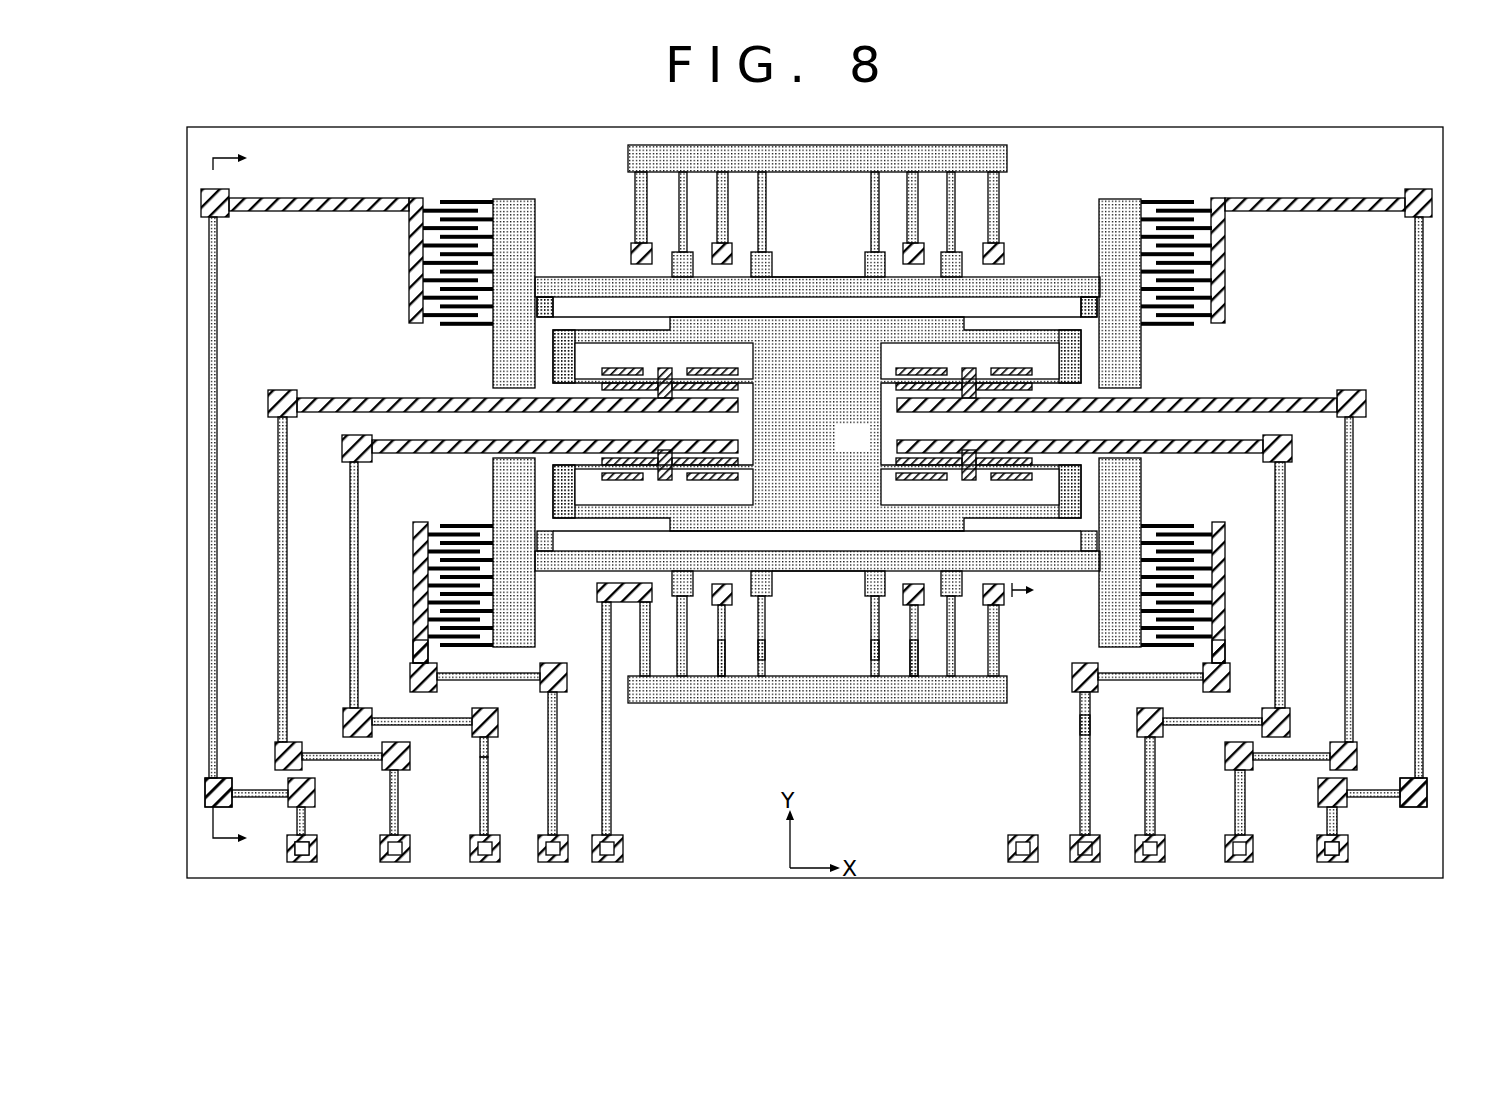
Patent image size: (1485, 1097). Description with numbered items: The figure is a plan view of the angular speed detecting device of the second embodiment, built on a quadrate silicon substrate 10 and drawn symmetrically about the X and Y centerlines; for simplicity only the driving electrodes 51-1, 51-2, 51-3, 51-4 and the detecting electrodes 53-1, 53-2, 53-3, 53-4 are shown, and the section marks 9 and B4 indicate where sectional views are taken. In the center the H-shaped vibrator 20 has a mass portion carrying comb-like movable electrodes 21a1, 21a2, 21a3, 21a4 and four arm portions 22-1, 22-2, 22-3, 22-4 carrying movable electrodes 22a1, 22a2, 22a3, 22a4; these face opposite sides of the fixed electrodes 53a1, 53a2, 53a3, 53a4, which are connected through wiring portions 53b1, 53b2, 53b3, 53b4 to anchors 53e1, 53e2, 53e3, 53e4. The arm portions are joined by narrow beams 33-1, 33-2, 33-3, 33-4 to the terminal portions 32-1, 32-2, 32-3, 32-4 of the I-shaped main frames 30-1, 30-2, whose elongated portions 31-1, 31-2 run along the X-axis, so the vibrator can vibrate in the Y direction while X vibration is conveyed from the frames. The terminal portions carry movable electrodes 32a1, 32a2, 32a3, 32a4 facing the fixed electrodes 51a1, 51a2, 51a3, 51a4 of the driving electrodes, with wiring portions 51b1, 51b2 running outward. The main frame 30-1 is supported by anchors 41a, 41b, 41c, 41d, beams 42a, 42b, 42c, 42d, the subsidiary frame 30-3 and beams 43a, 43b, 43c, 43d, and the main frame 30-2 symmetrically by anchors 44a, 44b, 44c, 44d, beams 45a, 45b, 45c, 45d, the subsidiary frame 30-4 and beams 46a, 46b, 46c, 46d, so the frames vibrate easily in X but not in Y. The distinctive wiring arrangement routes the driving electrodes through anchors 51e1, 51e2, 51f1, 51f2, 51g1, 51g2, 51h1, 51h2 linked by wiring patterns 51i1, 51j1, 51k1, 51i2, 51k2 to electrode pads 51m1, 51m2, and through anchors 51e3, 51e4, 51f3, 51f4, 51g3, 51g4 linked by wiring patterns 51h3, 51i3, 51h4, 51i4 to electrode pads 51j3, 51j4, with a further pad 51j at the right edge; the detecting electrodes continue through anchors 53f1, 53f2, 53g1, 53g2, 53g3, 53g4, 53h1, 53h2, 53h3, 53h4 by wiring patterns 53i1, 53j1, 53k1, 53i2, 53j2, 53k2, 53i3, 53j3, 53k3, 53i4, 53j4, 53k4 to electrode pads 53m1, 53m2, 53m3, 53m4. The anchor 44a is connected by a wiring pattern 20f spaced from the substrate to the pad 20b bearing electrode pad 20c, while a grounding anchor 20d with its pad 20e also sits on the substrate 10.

The substrate 10 is at (744, 858).
The section line 9 is at (236, 498).
The section line B4 is at (1038, 542).
The vibrator 20 is at (866, 450).
The pad 20b is at (623, 850).
The electrode pad 20c is at (612, 862).
The grounding anchor 20d is at (1008, 850).
The mass bonding pad 20e is at (1020, 862).
The wiring pattern 20f is at (611, 790).
The movable electrode 21a1 is at (738, 372).
The movable electrode 21a2 is at (900, 386).
The movable electrode 21a3 is at (738, 478).
The movable electrode 21a4 is at (900, 466).
The arm portion 22-1 is at (582, 317).
The arm portion 22-2 is at (1052, 317).
The arm portion 22-3 is at (582, 531).
The arm portion 22-4 is at (1070, 531).
The movable electrode 22a1 is at (560, 368).
The movable electrode 22a2 is at (1075, 368).
The movable electrode 22a3 is at (560, 480).
The movable electrode 22a4 is at (1075, 480).
The main frame 30-1 is at (565, 272).
The main frame 30-2 is at (580, 573).
The subsidiary frame 30-3 is at (816, 145).
The subsidiary frame 30-4 is at (800, 704).
The elongated portion 31-1 is at (795, 277).
The elongated portion 31-2 is at (822, 583).
The terminal portion 32-1 is at (493, 330).
The terminal portion 32-2 is at (1141, 330).
The terminal portion 32-3 is at (493, 480).
The terminal portion 32-4 is at (1141, 480).
The movable electrode 32a1 is at (480, 200).
The movable electrode 32a2 is at (1155, 200).
The movable electrode 32a3 is at (493, 640).
The movable electrode 32a4 is at (1141, 640).
The beam 33-1 is at (545, 297).
The beam 33-2 is at (1089, 297).
The beam 33-3 is at (597, 592).
The beam 33-4 is at (1004, 595).
The anchor 41a is at (641, 243).
The anchor 41b is at (722, 243).
The anchor 41c is at (913, 243).
The anchor 41d is at (1004, 250).
The beam 42a is at (683, 200).
The beam 42b is at (762, 200).
The beam 42c is at (876, 200).
The beam 42d is at (951, 200).
The beam 43a is at (641, 190).
The beam 43b is at (766, 235).
The beam 43c is at (871, 235).
The beam 43d is at (993, 190).
The anchor 44a is at (682, 676).
The anchor 44b is at (732, 596).
The anchor 44c is at (903, 596).
The anchor 44d is at (951, 676).
The beam 45a is at (645, 676).
The beam 45b is at (762, 676).
The beam 45c is at (875, 676).
The beam 45d is at (993, 676).
The beam 46a is at (723, 676).
The beam 46b is at (765, 650).
The beam 46c is at (873, 650).
The beam 46d is at (914, 676).
The driving electrode 51-1 is at (400, 290).
The driving electrode 51-2 is at (1233, 290).
The driving electrode 51-3 is at (412, 588).
The driving electrode 51-4 is at (1228, 588).
The fixed electrode 51a1 is at (440, 203).
The fixed electrode 51a2 is at (1195, 203).
The fixed electrode 51a3 is at (430, 655).
The fixed electrode 51a4 is at (1208, 655).
The wiring portion 51b1 is at (320, 180).
The wiring portion 51b2 is at (1340, 198).
The anchor 51e1 is at (228, 217).
The anchor 51e2 is at (1408, 217).
The anchor 51e3 is at (418, 660).
The anchor 51e4 is at (1245, 632).
The anchor 51f1 is at (218, 778).
The anchor 51f2 is at (1413, 778).
The anchor 51f3 is at (567, 690).
The anchor 51f4 is at (1072, 680).
The anchor 51g1 is at (287, 850).
The anchor 51g2 is at (1348, 850).
The anchor 51g3 is at (568, 835).
The anchor 51g4 is at (1070, 838).
The anchor 51h1 is at (300, 862).
The anchor 51h2 is at (1337, 862).
The wiring pattern 51h3 is at (437, 678).
The wiring pattern 51h4 is at (1203, 678).
The wiring pattern 51i1 is at (217, 440).
The wiring pattern 51i2 is at (1415, 440).
The wiring pattern 51i3 is at (557, 765).
The wiring pattern 51i4 is at (1080, 765).
The wiring pad 51j is at (1427, 790).
The wiring pattern 51j1 is at (205, 792).
The electrode pad 51j3 is at (555, 862).
The electrode pad 51j4 is at (1085, 862).
The wiring pattern 51k1 is at (315, 792).
The wiring pattern 51k2 is at (1318, 792).
The electrode pad 51m1 is at (309, 850).
The electrode pad 51m2 is at (1325, 850).
The detecting electrode 53-1 is at (696, 378).
The detecting electrode 53-2 is at (927, 378).
The detecting electrode 53-3 is at (696, 474).
The detecting electrode 53-4 is at (937, 474).
The fixed electrode 53a1 is at (668, 400).
The fixed electrode 53a2 is at (966, 400).
The fixed electrode 53a3 is at (660, 453).
The fixed electrode 53a4 is at (990, 436).
The wiring portion 53b1 is at (345, 398).
The wiring portion 53b2 is at (1330, 398).
The wiring portion 53b3 is at (530, 440).
The wiring portion 53b4 is at (1104, 440).
The anchor 53e1 is at (280, 390).
The anchor 53e2 is at (1355, 390).
The anchor 53e3 is at (345, 445).
The anchor 53e4 is at (1290, 445).
The anchor 53f1 is at (285, 742).
The anchor 53f2 is at (1345, 742).
The anchor 53g1 is at (413, 745).
The anchor 53g2 is at (1225, 752).
The anchor 53g3 is at (493, 743).
The anchor 53g4 is at (1080, 725).
The anchor 53h1 is at (430, 822).
The anchor 53h2 is at (1235, 838).
The anchor 53h3 is at (510, 812).
The anchor 53h4 is at (1150, 838).
The wiring pattern 53i1 is at (280, 520).
The wiring pattern 53i2 is at (1352, 520).
The wiring pattern 53i3 is at (352, 545).
The wiring pattern 53i4 is at (1285, 545).
The wiring pattern 53j1 is at (343, 716).
The wiring pattern 53j2 is at (1293, 715).
The wiring pattern 53j3 is at (475, 708).
The wiring pattern 53j4 is at (1145, 708).
The wiring pattern 53k1 is at (398, 790).
The wiring pattern 53k2 is at (1235, 790).
The wiring pattern 53k3 is at (488, 770).
The wiring pattern 53k4 is at (1150, 770).
The electrode pad 53m1 is at (400, 862).
The electrode pad 53m2 is at (1238, 862).
The electrode pad 53m3 is at (488, 862).
The electrode pad 53m4 is at (1150, 862).